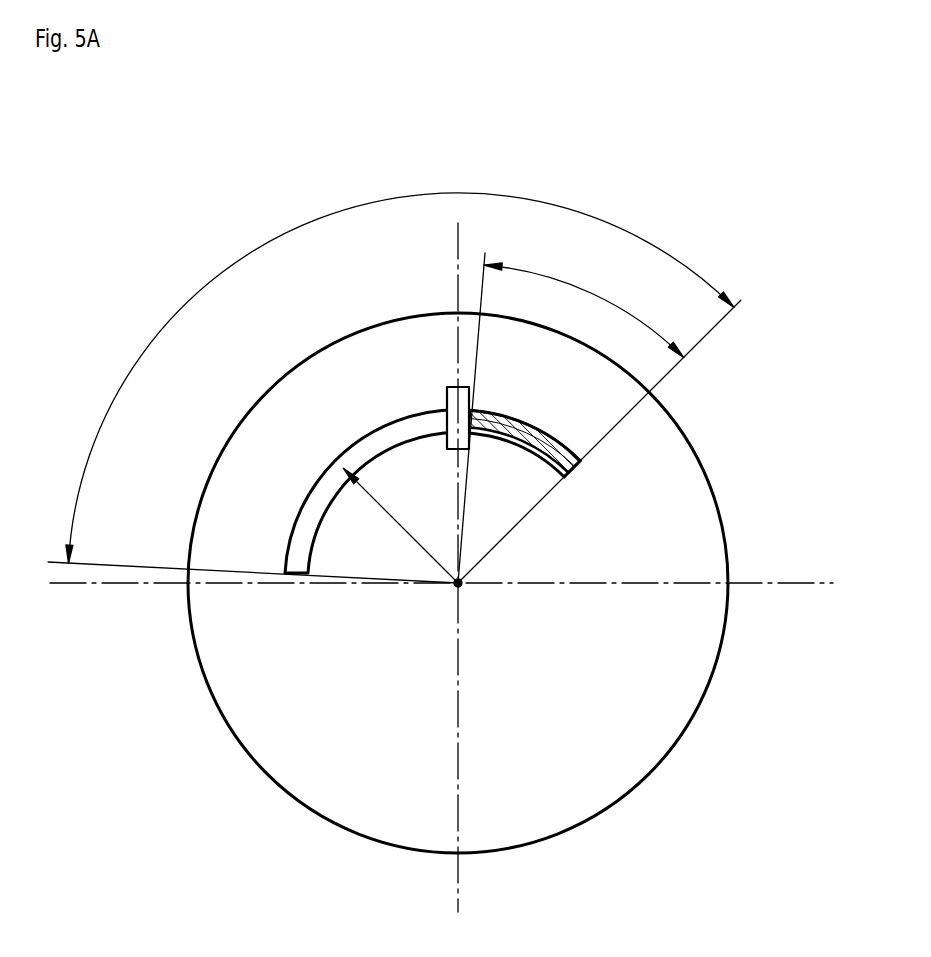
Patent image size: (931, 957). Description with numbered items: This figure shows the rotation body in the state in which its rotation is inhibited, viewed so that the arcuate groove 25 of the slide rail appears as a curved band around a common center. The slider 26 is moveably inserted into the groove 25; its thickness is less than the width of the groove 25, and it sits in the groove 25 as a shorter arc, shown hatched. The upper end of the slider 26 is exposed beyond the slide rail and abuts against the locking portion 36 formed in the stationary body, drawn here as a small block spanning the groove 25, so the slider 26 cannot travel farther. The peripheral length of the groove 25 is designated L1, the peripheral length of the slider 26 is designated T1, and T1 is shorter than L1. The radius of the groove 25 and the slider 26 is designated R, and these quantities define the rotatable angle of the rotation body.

The groove 25 is at (297, 538).
The slider 26 is at (529, 441).
The locking portion 36 is at (447, 388).
The radius of the groove and the slider R is at (387, 515).
The peripheral length of the slider T1 is at (602, 297).
The peripheral length of the groove L1 is at (275, 239).